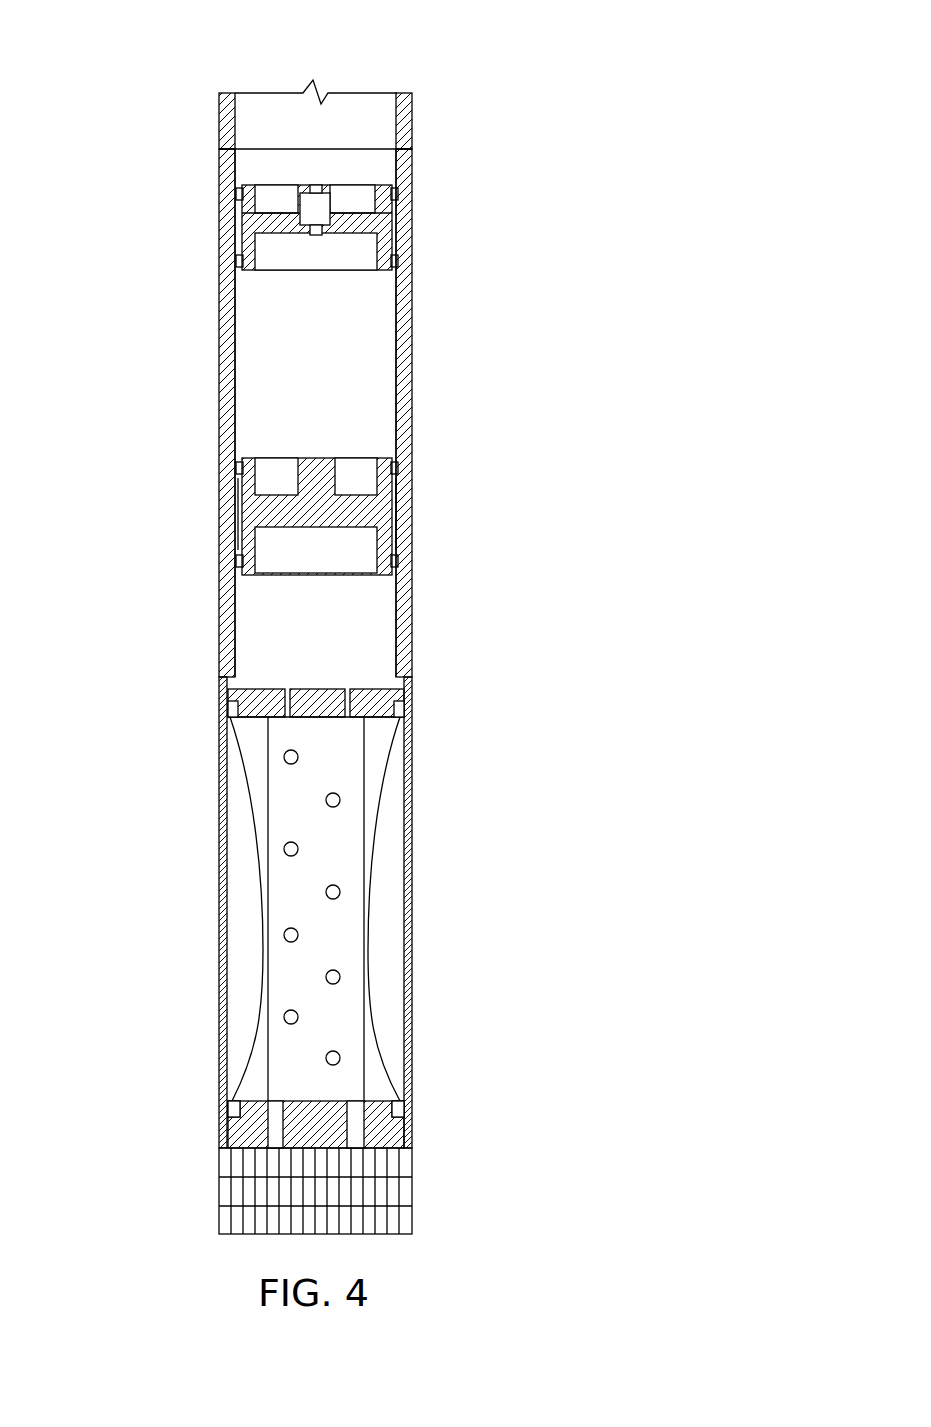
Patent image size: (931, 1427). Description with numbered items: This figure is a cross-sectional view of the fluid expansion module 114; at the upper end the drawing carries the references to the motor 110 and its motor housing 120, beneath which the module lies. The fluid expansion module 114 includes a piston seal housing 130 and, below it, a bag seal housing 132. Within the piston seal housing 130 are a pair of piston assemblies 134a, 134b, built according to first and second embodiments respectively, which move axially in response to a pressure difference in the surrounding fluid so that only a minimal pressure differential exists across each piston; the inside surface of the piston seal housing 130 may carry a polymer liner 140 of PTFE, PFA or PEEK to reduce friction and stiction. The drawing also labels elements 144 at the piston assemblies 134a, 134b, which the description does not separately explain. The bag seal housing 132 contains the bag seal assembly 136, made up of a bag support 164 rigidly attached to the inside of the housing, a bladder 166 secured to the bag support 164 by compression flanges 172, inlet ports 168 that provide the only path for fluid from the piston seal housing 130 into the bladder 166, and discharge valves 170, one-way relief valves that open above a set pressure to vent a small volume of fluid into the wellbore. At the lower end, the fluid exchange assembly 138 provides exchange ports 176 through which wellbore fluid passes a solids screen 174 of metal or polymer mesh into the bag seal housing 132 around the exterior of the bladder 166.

The motor 110 is at (432, 112).
The fluid expansion module 114 is at (502, 575).
The motor housing 120 is at (219, 113).
The piston seal housing 130 is at (412, 385).
The bag seal housing 132 is at (412, 907).
The piston assembly 134a is at (206, 531).
The piston assembly 134b is at (206, 225).
The bag seal assembly 136 is at (250, 910).
The fluid exchange assembly 138 is at (432, 1190).
The polymer liner 140 is at (397, 340).
The retaining clips 144 is at (238, 192).
The bag support 164 is at (347, 750).
The bladder 166 is at (378, 803).
The inlet ports 168 is at (285, 700).
The discharge valves 170 is at (228, 1135).
The compression flanges 172 is at (232, 711).
The solids screen 174 is at (225, 1186).
The exchange ports 176 is at (228, 1117).